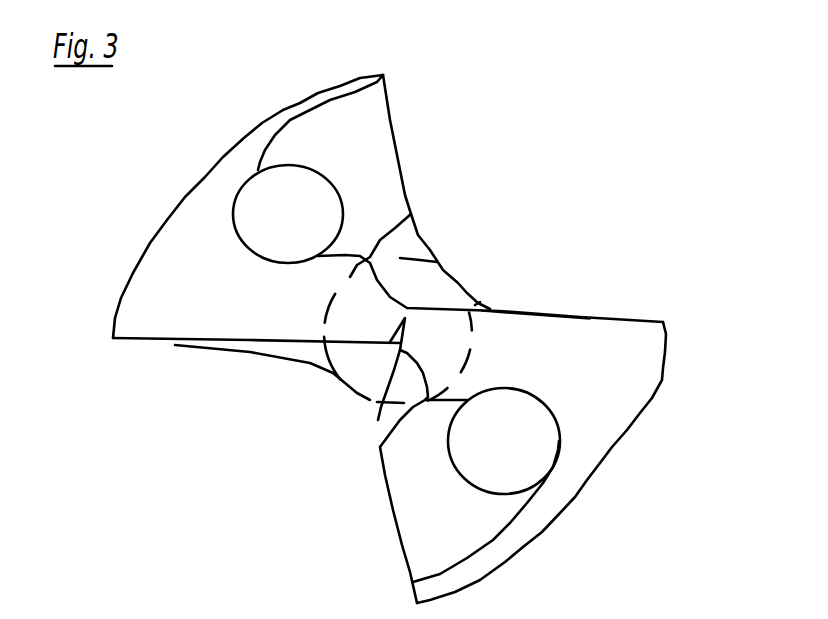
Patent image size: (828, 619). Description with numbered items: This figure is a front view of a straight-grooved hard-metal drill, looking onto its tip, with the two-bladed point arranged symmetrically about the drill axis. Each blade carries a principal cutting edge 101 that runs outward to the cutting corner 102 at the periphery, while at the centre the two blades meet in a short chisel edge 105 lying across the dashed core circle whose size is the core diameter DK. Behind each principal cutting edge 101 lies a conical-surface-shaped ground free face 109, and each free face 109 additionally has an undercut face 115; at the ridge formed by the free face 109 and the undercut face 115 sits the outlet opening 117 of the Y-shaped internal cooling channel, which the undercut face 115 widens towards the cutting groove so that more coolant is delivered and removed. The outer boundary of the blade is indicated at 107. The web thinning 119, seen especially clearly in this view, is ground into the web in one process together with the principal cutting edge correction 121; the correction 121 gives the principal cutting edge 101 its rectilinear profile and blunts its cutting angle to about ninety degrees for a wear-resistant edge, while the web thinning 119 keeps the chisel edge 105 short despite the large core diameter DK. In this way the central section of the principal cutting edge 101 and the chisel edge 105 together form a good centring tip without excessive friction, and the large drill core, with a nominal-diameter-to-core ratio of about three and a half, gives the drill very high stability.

The principal cutting edge 101 is at (307, 350).
The cutting corner 102 is at (113, 338).
The chisel edge 105 is at (371, 417).
The outer circumferential surface 107 is at (667, 342).
The free face 109 is at (190, 234).
The undercut face 115 is at (368, 122).
The outlet opening 117 is at (257, 203).
The web thinning 119 is at (413, 271).
The principal cutting edge correction 121 is at (475, 312).
The core diameter DK is at (323, 311).